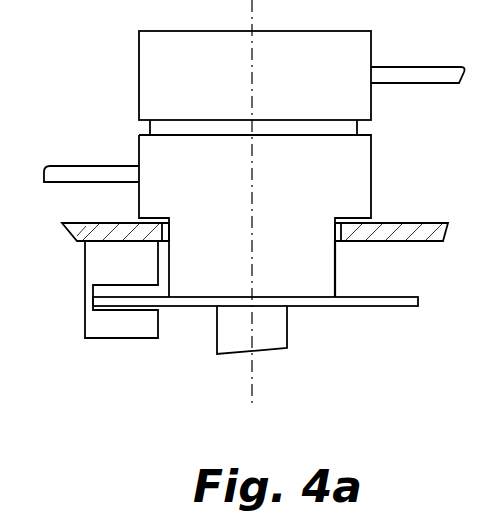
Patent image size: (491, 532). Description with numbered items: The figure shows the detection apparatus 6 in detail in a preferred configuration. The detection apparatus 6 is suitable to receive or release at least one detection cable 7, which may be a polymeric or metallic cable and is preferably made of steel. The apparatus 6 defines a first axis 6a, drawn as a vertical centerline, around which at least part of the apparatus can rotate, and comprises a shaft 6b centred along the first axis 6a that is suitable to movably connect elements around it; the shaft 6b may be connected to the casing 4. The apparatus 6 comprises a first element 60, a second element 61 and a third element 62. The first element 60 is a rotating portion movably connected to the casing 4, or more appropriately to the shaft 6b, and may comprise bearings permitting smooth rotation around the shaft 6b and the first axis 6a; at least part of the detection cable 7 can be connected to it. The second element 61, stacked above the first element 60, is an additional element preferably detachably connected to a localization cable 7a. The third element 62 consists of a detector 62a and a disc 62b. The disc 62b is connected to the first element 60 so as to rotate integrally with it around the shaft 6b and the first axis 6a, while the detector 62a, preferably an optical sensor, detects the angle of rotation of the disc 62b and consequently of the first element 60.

The casing 4 is at (383, 223).
The detection apparatus 6 is at (255, 301).
The first axis 6a is at (257, 373).
The shaft 6b is at (288, 325).
The detection cable 7 is at (92, 183).
The localization cable 7a is at (413, 84).
The first element 60 is at (321, 194).
The second element 61 is at (216, 88).
The third element 62 is at (115, 350).
The detector 62a is at (146, 277).
The disc 62b is at (365, 296).